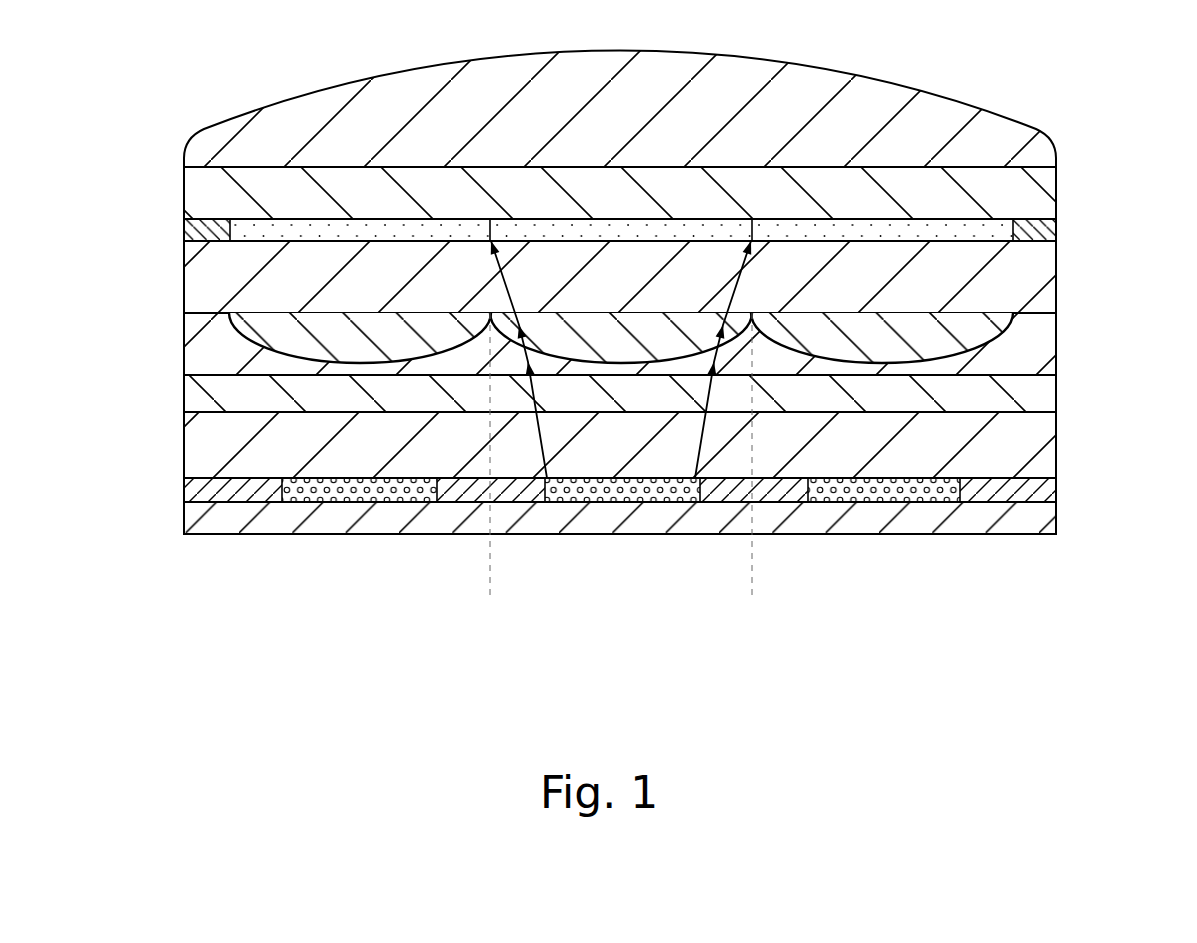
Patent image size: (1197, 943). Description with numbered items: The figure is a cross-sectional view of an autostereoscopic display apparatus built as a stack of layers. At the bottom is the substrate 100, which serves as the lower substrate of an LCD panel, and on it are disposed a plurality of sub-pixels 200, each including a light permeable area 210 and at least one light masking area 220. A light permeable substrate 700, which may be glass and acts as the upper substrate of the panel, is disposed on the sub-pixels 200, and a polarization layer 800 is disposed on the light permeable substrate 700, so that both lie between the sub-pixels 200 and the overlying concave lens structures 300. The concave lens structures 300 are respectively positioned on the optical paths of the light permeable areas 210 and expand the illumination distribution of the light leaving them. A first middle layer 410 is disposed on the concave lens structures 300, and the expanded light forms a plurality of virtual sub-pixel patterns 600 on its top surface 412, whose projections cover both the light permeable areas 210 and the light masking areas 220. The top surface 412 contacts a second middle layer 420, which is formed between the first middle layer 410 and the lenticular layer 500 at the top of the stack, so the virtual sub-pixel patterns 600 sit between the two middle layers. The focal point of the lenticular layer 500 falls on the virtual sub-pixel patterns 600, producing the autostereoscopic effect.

The substrate 100 is at (1038, 518).
The sub-pixels 200 is at (742, 685).
The light permeable area 210 is at (627, 503).
The light masking area 220 is at (520, 503).
The concave lens structures 300 is at (245, 333).
The first middle layer 410 is at (1058, 272).
The top surface 412 is at (216, 211).
The second middle layer 420 is at (1058, 178).
The lenticular layer 500 is at (190, 150).
The virtual sub-pixel patterns 600 is at (990, 230).
The light permeable substrate 700 is at (1037, 450).
The polarization layer 800 is at (1038, 393).